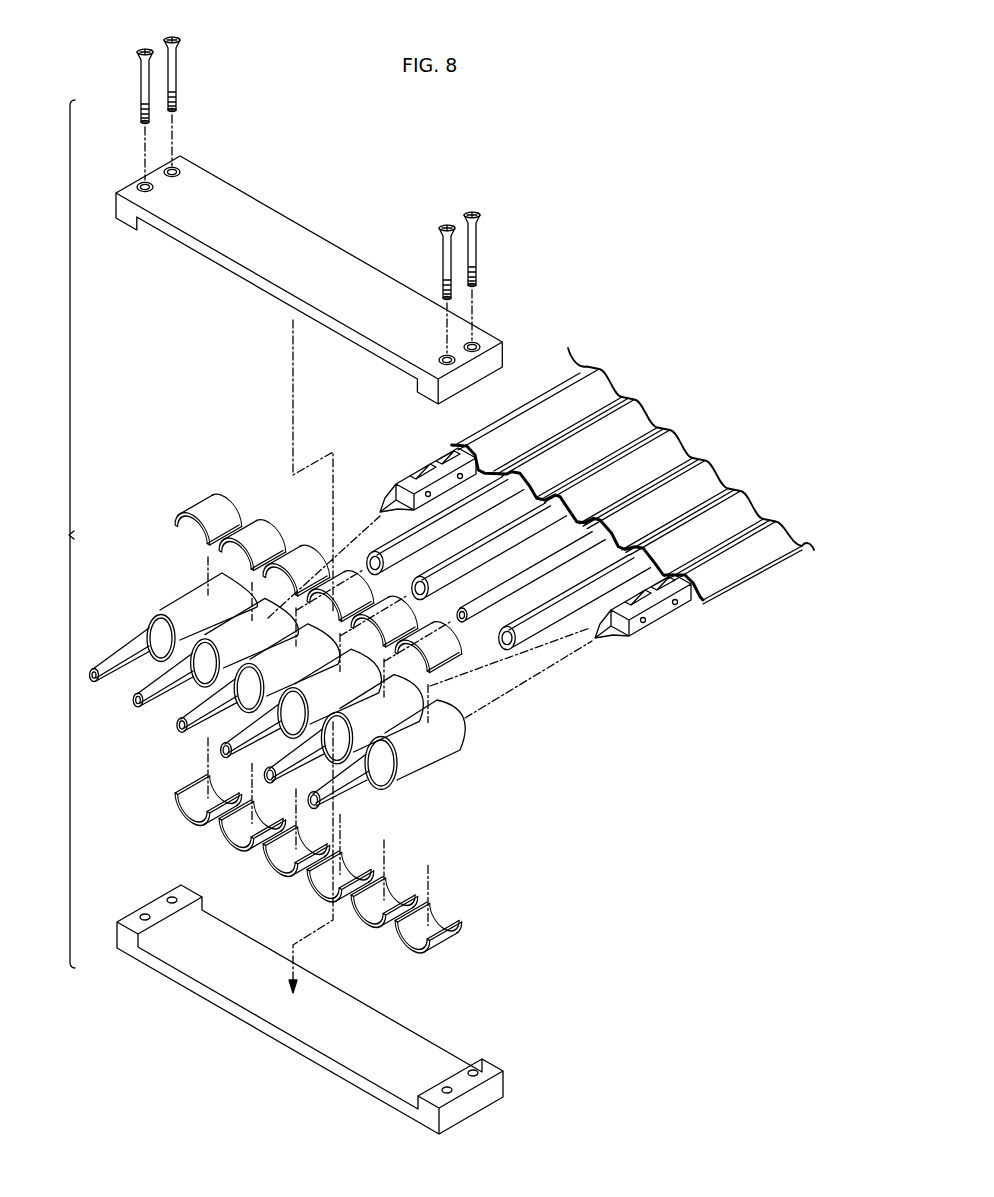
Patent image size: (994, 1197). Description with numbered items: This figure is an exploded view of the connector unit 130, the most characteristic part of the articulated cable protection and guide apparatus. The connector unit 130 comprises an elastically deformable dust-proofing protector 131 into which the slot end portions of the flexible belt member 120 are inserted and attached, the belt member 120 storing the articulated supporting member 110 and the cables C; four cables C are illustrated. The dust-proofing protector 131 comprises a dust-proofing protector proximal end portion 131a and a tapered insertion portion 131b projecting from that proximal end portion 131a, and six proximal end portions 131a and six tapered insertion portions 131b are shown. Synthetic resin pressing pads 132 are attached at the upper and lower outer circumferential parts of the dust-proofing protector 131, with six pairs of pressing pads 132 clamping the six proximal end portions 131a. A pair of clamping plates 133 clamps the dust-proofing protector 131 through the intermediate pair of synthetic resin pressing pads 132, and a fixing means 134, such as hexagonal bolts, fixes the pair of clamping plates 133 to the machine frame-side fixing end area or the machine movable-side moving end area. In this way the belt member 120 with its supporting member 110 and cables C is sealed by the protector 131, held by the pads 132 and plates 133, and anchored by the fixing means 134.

The articulated supporting member 110 is at (412, 481).
The flexible belt member 120 is at (737, 557).
The connector unit 130 is at (60, 550).
The dust-proofing protector 131 is at (171, 548).
The dust-proofing protector proximal end portion 131a is at (187, 603).
The tapered insertion portion 131b is at (128, 653).
The synthetic resin pressing pad 132 is at (218, 508).
The clamping plate 133 is at (303, 237).
The fixing means 134 is at (142, 83).
The cable C is at (575, 637).